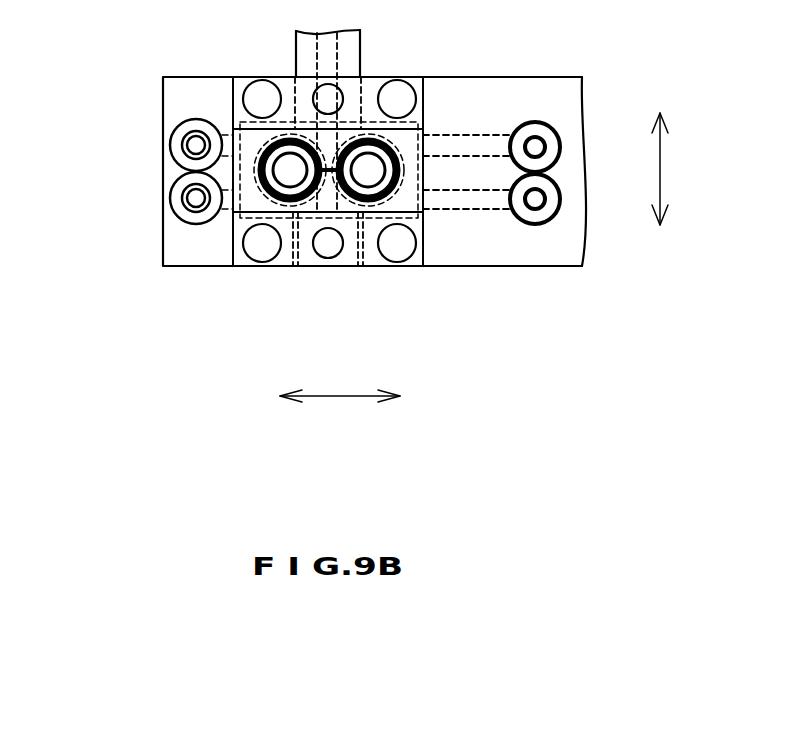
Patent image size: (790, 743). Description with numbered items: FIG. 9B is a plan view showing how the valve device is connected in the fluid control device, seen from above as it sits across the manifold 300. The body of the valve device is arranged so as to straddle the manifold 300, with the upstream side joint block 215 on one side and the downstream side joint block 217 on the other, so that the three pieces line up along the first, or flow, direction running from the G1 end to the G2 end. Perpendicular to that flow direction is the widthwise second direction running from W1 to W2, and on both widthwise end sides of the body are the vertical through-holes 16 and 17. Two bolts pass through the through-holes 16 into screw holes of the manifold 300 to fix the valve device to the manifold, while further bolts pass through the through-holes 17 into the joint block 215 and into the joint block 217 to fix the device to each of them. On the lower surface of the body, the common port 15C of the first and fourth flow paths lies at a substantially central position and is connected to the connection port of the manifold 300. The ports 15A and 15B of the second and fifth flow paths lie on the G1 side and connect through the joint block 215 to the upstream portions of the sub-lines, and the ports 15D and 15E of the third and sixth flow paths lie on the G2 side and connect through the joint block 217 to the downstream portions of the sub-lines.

The joint block 215 is at (205, 102).
The joint block 217 is at (493, 88).
The manifold 300 is at (348, 52).
The through-holes 17 is at (243, 265).
The through-holes 16 is at (317, 267).
The port 15A is at (233, 117).
The port 15B is at (222, 216).
The common port 15C is at (355, 213).
The port 15D is at (436, 128).
The port 15E is at (430, 220).
The second direction end W1 is at (660, 154).
The second direction end W2 is at (660, 244).
The first direction end G1 is at (326, 397).
The first direction end G2 is at (417, 397).